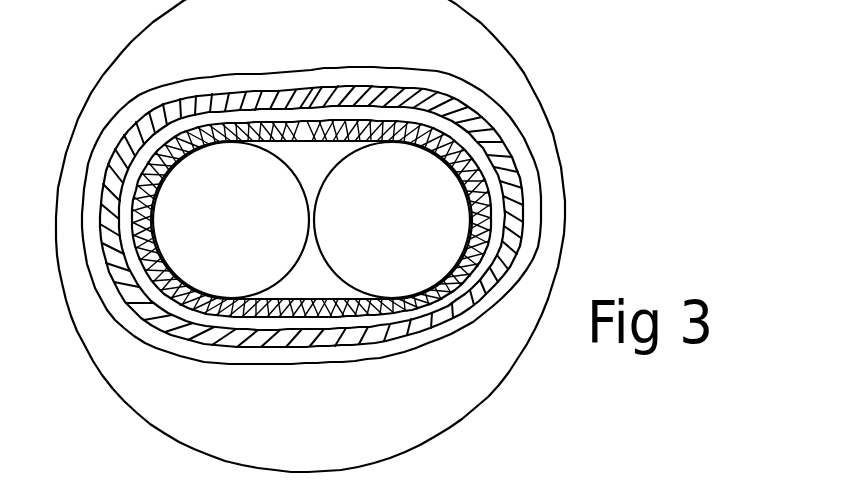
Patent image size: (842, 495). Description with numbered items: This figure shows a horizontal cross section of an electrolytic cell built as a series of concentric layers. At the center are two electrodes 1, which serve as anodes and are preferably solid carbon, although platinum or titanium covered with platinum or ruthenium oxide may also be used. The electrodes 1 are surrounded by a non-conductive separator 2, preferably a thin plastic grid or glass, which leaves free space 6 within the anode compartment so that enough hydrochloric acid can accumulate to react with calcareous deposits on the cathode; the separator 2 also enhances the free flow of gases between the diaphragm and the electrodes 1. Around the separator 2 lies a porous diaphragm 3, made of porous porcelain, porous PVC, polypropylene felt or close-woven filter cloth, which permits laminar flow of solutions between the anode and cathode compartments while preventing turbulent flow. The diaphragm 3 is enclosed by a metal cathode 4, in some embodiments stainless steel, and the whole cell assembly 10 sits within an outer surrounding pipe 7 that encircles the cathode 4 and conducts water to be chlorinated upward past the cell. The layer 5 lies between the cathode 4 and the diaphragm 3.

The electrodes (anodes) 1 is at (311, 220).
The non-conductive separator 2 is at (492, 173).
The porous diaphragm 3 is at (495, 238).
The metal cathode 4 is at (460, 329).
The insulating layer 5 is at (498, 277).
The free space 6 is at (322, 281).
The outer surrounding pipe 7 is at (140, 416).
The cable 10 is at (332, 290).